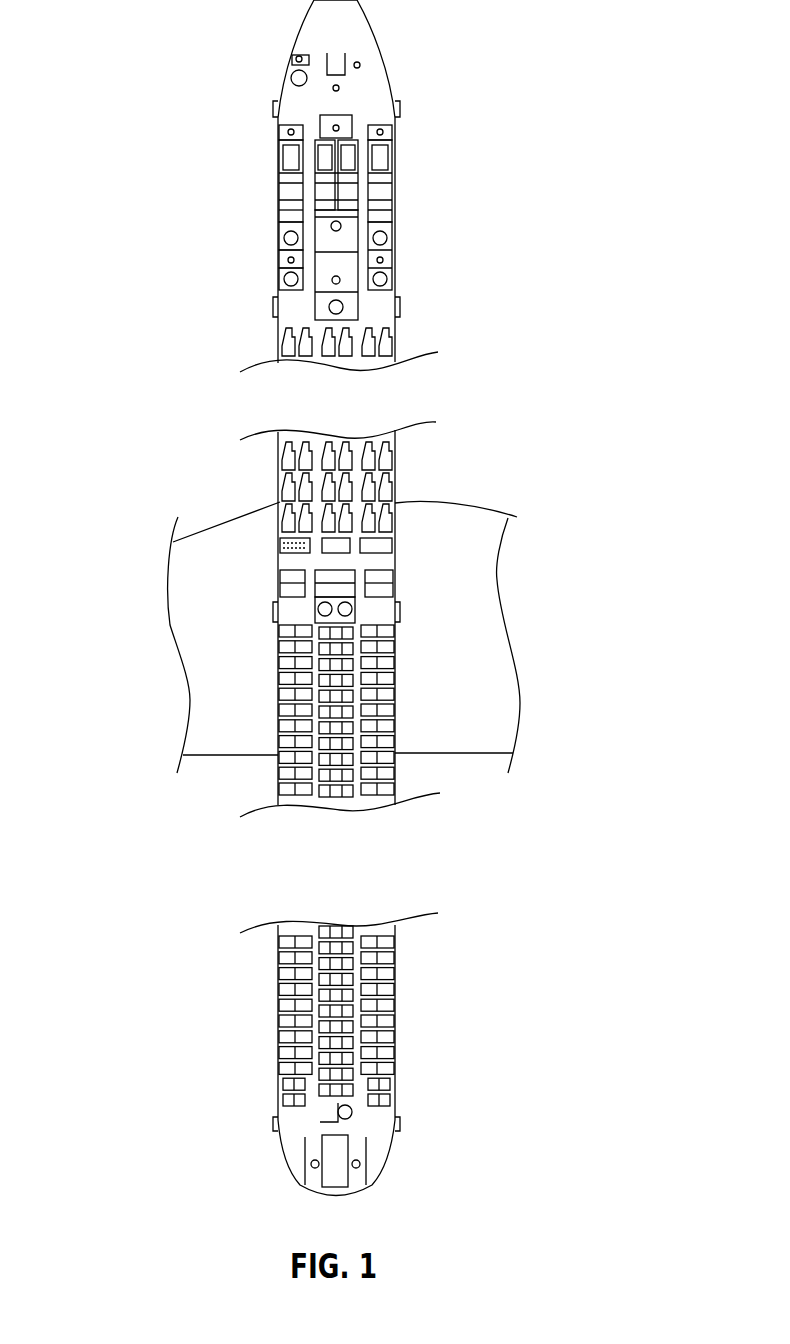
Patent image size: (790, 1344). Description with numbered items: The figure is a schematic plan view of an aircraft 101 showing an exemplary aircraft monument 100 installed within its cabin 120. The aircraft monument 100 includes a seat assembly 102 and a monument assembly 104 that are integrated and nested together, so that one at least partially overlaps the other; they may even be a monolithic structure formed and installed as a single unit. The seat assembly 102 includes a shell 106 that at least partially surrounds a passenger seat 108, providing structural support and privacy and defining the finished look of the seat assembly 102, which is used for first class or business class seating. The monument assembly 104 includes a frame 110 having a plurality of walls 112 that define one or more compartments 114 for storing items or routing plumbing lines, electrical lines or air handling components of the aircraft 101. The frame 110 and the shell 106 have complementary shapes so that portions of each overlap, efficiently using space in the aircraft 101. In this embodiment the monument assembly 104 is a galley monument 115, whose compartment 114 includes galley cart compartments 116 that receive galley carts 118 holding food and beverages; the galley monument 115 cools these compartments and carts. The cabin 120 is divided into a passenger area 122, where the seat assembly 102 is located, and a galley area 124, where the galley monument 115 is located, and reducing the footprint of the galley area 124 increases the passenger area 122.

The aircraft 101 is at (568, 122).
The aircraft monument 100 is at (264, 227).
The seat assembly 102 is at (398, 158).
The monument assembly 104 is at (398, 128).
The shell 106 is at (306, 204).
The passenger seat 108 is at (302, 204).
The frame 110 is at (300, 236).
The walls 112 is at (297, 237).
The compartment 114 is at (300, 233).
The galley monument 115 is at (330, 125).
The galley cart compartments 116 is at (280, 563).
The galley carts 118 is at (300, 573).
The cabin 120 is at (375, 303).
The passenger area 122 is at (294, 303).
The galley area 124 is at (392, 544).